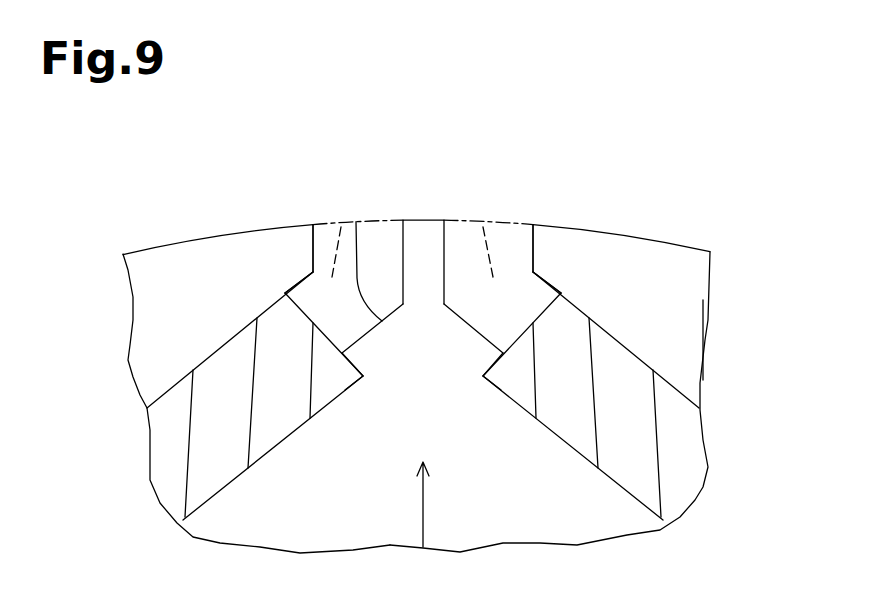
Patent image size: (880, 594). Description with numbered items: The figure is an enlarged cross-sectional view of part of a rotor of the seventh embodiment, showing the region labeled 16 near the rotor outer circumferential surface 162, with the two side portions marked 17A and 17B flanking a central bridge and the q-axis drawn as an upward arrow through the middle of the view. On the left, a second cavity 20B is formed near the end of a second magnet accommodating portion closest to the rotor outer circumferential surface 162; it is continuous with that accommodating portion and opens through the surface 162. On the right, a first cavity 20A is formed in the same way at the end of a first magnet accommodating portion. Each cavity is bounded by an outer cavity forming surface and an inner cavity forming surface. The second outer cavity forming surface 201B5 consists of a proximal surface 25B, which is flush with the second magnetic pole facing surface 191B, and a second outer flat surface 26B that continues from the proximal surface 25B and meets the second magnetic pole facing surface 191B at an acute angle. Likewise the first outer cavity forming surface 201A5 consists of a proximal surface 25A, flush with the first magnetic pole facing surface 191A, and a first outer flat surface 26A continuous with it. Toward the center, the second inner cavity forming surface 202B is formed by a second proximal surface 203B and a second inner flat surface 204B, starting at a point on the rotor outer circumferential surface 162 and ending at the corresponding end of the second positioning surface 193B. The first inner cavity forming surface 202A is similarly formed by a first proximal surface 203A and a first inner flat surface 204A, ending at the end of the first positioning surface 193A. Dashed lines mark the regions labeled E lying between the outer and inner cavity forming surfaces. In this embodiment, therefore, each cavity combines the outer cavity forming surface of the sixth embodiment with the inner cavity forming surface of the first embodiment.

The rotor core 16 is at (713, 284).
The rotor outer circumferential surface 162 is at (688, 246).
The rotor core portion (A side) 17A is at (703, 483).
The rotor core portion (B side) 17B is at (152, 458).
The first cavity 20A is at (483, 317).
The second cavity 20B is at (337, 326).
The first magnetic pole facing surface 191A is at (626, 347).
The second magnetic pole facing surface 191B is at (222, 347).
The first positioning surface 193A is at (561, 406).
The second positioning surface 193B is at (273, 406).
The first outer cavity forming surface 201A5 is at (613, 192).
The second outer cavity forming surface 201B5 is at (300, 171).
The proximal surface 25A is at (557, 288).
The proximal surface 25B is at (283, 290).
The first outer flat surface 26A is at (531, 230).
The second outer flat surface 26B is at (318, 229).
The first inner cavity forming surface 202A is at (353, 365).
The second inner cavity forming surface 202B is at (453, 170).
The first proximal surface 203A is at (389, 411).
The second proximal surface 203B is at (357, 221).
The first inner flat surface 204A is at (445, 283).
The second inner flat surface 204B is at (403, 222).
The region E is at (414, 267).
The q-axis direction q-axis is at (429, 509).